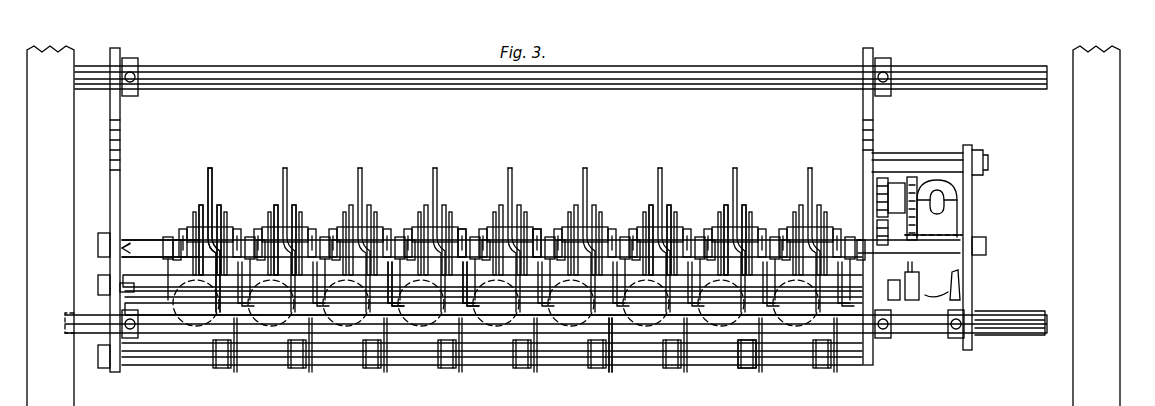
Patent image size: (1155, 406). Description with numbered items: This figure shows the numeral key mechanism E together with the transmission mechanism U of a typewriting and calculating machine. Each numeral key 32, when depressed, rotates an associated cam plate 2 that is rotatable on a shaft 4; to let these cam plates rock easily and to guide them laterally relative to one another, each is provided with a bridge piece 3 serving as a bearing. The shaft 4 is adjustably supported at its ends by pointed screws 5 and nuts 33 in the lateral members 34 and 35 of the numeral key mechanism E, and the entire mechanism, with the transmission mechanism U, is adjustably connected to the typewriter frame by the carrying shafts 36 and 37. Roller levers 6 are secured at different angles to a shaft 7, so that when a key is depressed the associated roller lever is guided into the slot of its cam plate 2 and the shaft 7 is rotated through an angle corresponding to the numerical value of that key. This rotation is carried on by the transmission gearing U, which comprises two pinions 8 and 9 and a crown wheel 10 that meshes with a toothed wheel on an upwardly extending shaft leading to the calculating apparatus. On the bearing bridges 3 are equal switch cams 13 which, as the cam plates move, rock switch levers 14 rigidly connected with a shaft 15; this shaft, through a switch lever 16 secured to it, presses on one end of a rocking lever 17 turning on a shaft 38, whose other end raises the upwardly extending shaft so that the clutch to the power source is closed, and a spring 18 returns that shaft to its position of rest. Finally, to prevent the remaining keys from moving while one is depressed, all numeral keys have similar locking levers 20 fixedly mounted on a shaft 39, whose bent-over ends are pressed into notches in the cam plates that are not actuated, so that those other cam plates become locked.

The cam plate 2 is at (213, 175).
The bridge piece 3 is at (471, 305).
The shaft 4 is at (151, 284).
The pointed screws 5 is at (118, 288).
The roller levers 6 is at (280, 202).
The shaft 7 is at (141, 240).
The pinion 8 is at (877, 232).
The pinion 9 is at (877, 197).
The crown wheel 10 is at (913, 190).
The switch cams 13 is at (540, 245).
The switch levers 14 is at (466, 235).
The shaft 15 is at (895, 293).
The switch lever 16 is at (918, 283).
The rocking lever 17 is at (937, 208).
The spring 18 is at (960, 290).
The locking levers 20 is at (611, 366).
The numeral key 32 is at (378, 332).
The nuts 33 is at (100, 277).
The lateral member 34 is at (119, 125).
The lateral member 35 is at (865, 112).
The carrying shaft 36 is at (268, 77).
The carrying shaft 37 is at (1010, 336).
The shaft 38 is at (752, 372).
The shaft 39 is at (719, 368).
The numeral key mechanism E is at (397, 177).
The transmission mechanism U is at (994, 198).